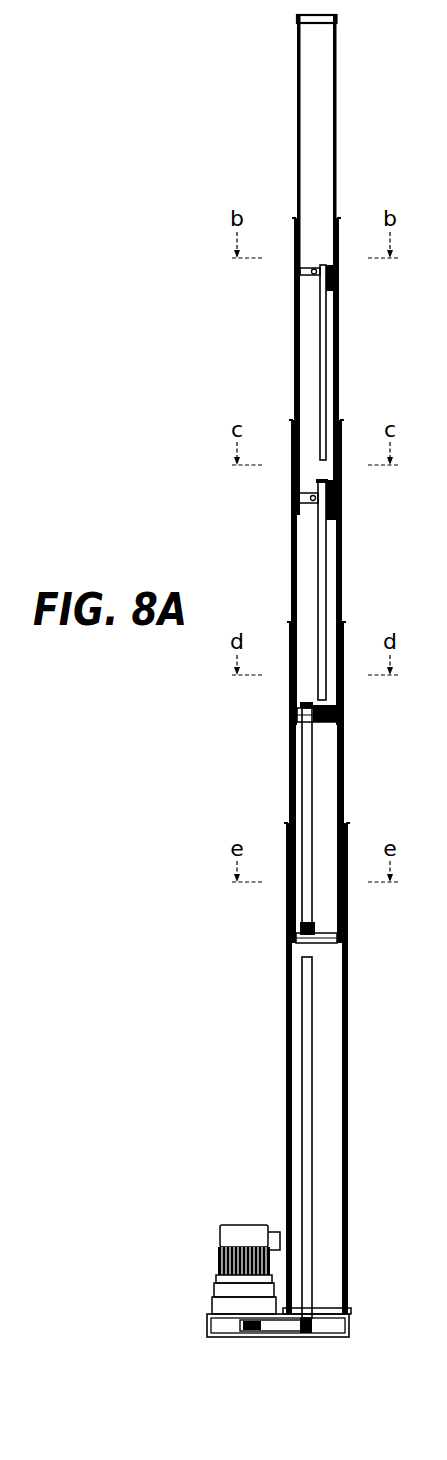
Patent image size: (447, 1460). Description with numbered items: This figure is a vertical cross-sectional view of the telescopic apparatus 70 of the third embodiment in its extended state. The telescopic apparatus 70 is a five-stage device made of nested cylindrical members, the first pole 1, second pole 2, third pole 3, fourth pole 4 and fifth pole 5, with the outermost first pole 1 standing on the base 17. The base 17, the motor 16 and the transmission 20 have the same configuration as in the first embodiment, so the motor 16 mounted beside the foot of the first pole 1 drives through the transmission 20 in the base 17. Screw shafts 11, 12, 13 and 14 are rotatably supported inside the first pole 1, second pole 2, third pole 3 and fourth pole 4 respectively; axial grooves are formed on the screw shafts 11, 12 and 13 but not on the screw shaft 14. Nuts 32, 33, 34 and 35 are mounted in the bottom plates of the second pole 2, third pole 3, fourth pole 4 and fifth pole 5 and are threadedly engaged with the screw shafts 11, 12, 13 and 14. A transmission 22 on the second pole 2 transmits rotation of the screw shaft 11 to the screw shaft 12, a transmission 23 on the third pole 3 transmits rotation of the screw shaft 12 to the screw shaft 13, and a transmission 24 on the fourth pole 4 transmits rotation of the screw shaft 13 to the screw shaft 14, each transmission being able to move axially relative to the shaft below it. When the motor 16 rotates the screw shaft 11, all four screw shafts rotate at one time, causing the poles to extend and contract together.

The telescopic apparatus 70 is at (261, 111).
The fifth pole 5 is at (337, 105).
The fourth pole 4 is at (340, 357).
The third pole 3 is at (343, 567).
The second pole 2 is at (345, 775).
The first pole 1 is at (349, 1138).
The nut 35 is at (318, 274).
The nut 34 is at (318, 500).
The nut 33 is at (297, 728).
The nut 32 is at (297, 940).
The screw shaft 14 is at (320, 337).
The screw shaft 13 is at (318, 562).
The screw shaft 12 is at (302, 780).
The screw shaft 11 is at (302, 1070).
The transmission 24 is at (338, 470).
The transmission 23 is at (315, 699).
The transmission 22 is at (320, 927).
The motor 16 is at (218, 1262).
The base 17 is at (350, 1325).
The transmission 20 is at (282, 1338).